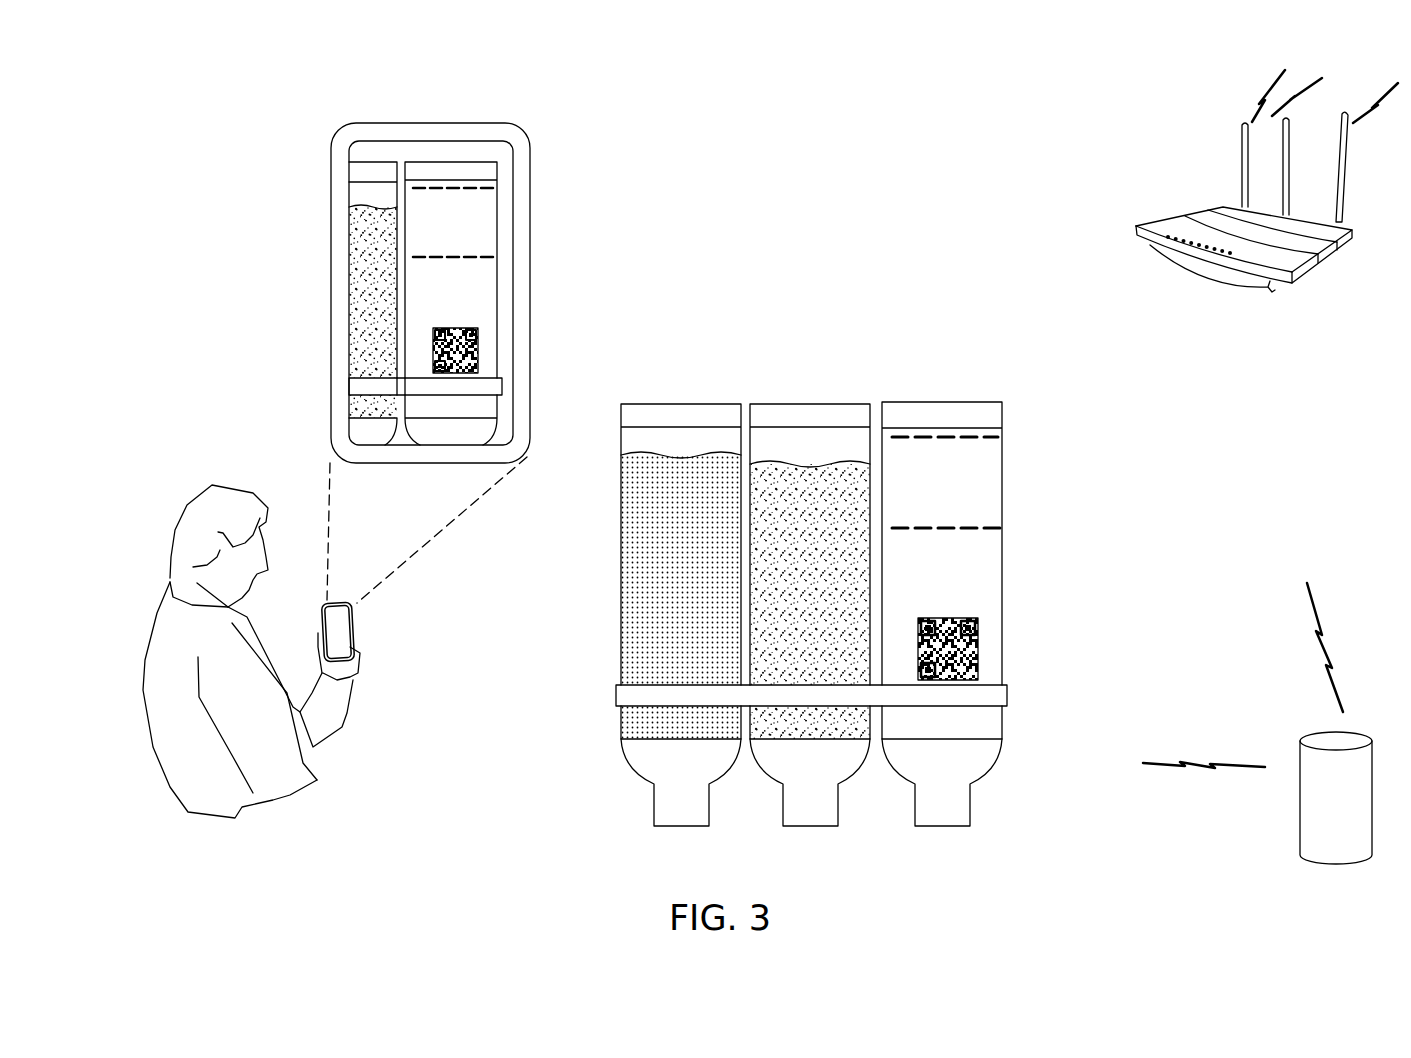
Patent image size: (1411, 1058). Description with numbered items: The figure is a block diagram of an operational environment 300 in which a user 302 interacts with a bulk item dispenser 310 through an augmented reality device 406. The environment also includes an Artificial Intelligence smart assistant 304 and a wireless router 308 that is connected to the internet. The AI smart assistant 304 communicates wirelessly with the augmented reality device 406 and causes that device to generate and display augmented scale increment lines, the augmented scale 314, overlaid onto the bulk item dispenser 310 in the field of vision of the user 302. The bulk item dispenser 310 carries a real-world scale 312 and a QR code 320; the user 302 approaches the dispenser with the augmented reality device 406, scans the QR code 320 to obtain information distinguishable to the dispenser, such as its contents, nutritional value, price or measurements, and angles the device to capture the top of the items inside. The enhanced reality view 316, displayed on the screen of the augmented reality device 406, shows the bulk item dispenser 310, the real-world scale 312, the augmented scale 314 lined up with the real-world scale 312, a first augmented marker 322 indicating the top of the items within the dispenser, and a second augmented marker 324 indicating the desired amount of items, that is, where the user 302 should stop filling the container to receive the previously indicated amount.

The operational environment 300 is at (208, 137).
The user 302 is at (158, 618).
The Artificial Intelligence (AI) smart assistant 304 is at (1300, 827).
The wireless router 308 is at (1240, 280).
The bulk item dispenser 310 is at (988, 402).
The real-world scale 312 is at (1000, 447).
The augmented scale 314 is at (922, 437).
The enhanced reality view 316 is at (515, 245).
The QR code 320 is at (979, 651).
The first augmented marker 322 is at (980, 434).
The second augmented marker 324 is at (900, 527).
The augmented reality device 406 is at (358, 630).